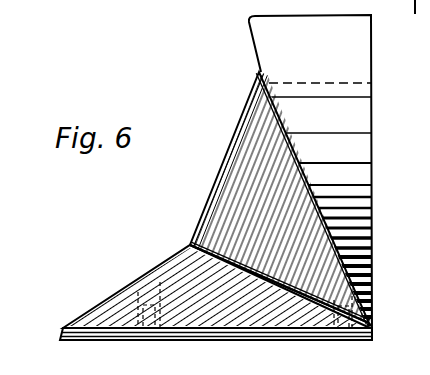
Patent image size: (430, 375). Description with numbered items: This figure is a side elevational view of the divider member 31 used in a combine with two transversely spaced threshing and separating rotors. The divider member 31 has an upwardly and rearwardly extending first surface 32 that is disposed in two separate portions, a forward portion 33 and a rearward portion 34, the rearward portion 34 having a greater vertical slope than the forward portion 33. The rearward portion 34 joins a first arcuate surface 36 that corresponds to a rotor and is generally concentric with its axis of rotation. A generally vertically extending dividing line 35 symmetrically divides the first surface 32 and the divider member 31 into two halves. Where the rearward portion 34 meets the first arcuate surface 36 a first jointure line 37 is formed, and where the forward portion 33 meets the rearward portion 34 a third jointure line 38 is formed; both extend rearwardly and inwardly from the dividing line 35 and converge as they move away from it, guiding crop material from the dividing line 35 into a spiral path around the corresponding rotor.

The divider member 31 is at (165, 73).
The first surface 32 is at (135, 232).
The forward portion 33 is at (137, 292).
The rearward portion 34 is at (248, 188).
The dividing line 35 is at (225, 162).
The first arcuate surface 36 is at (355, 118).
The first jointure line 37 is at (277, 115).
The third jointure line 38 is at (175, 266).